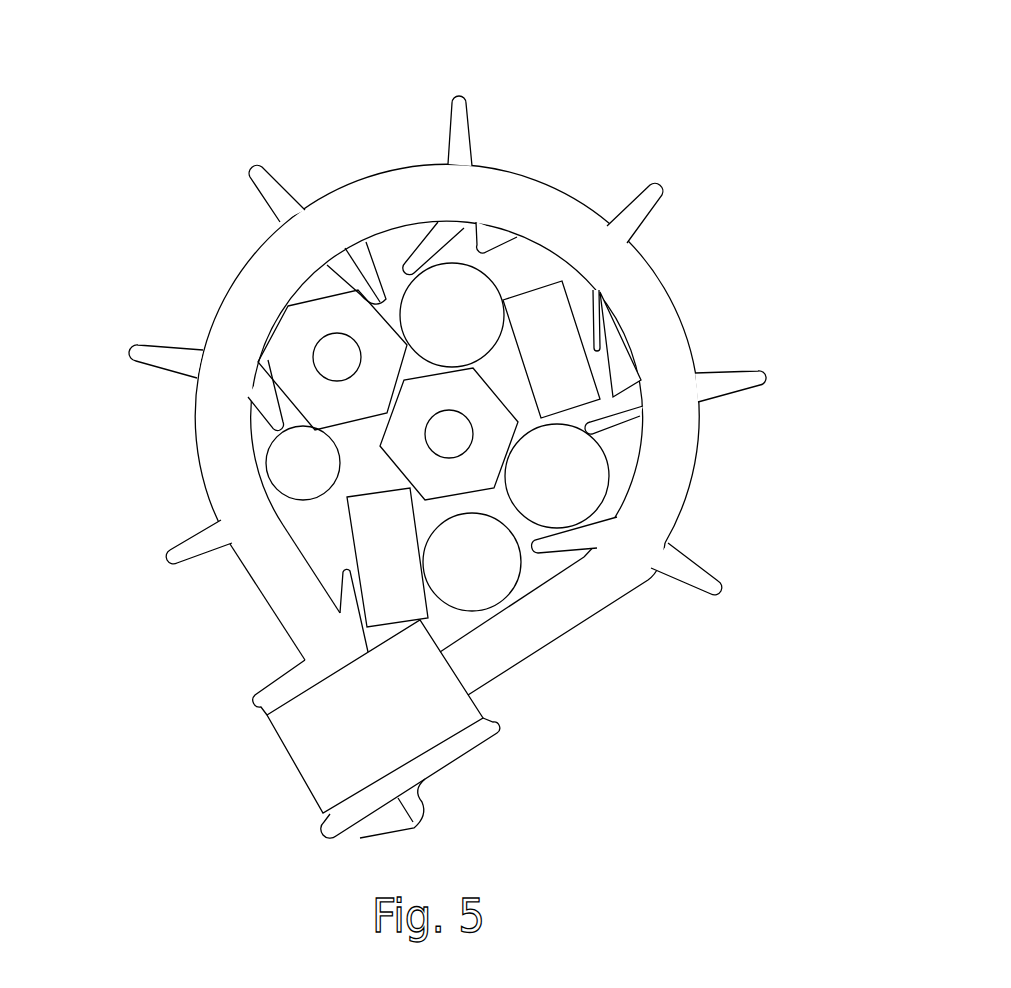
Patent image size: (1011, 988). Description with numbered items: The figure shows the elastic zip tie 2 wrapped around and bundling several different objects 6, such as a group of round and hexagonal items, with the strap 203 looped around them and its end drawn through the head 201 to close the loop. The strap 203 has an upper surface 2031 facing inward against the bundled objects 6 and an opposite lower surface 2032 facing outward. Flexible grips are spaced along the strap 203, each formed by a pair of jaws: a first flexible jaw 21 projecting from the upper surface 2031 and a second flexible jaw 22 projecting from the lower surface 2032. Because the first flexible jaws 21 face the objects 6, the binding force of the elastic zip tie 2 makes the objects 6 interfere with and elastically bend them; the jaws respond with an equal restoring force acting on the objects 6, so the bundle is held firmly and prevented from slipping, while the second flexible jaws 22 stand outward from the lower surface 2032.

The elastic zip tie 2 is at (521, 469).
The head 201 is at (232, 781).
The strap 203 is at (287, 580).
The upper surface 2031 is at (477, 224).
The lower surface 2032 is at (693, 478).
The first flexible jaw 21 is at (613, 398).
The second flexible jaw 22 is at (743, 380).
The objects 6 is at (297, 335).